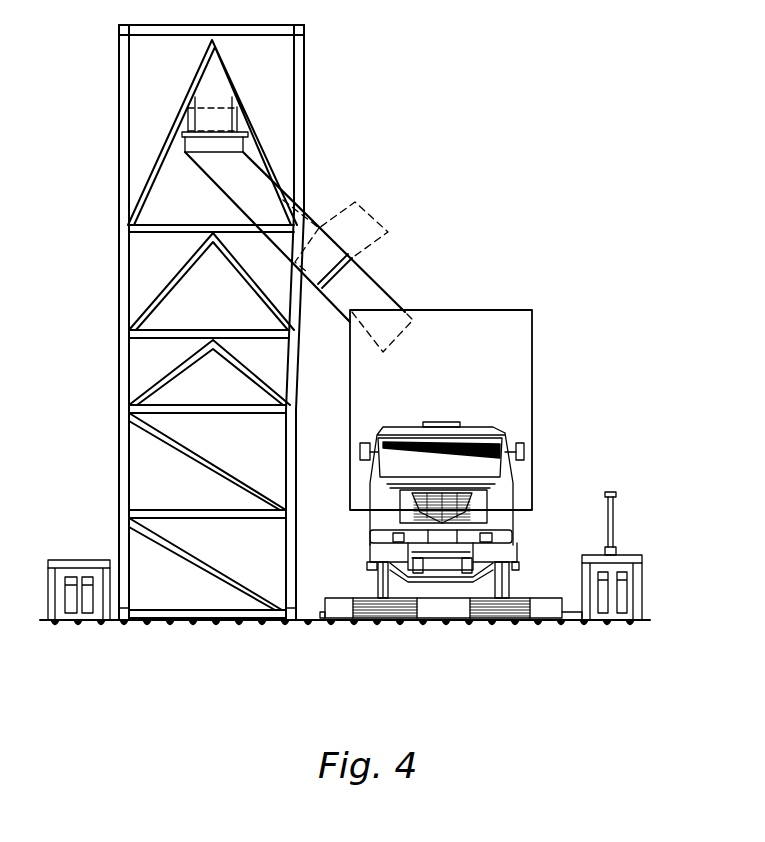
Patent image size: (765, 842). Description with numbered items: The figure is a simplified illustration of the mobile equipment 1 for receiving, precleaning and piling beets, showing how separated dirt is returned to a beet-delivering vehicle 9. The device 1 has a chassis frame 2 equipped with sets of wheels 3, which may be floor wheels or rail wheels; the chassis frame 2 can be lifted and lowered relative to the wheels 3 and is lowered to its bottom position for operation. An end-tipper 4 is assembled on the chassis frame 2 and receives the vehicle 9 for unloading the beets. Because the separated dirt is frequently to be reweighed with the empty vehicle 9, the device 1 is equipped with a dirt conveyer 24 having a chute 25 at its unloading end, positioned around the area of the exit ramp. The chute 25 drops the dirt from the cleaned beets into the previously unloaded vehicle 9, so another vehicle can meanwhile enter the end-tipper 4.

The mobile equipment 1 is at (412, 278).
The chassis frame 2 is at (310, 627).
The sets of wheels 3 is at (587, 665).
The end-tipper 4 is at (512, 603).
The vehicle 9 is at (513, 345).
The dirt conveyer 24 is at (222, 127).
The chute 25 is at (312, 225).